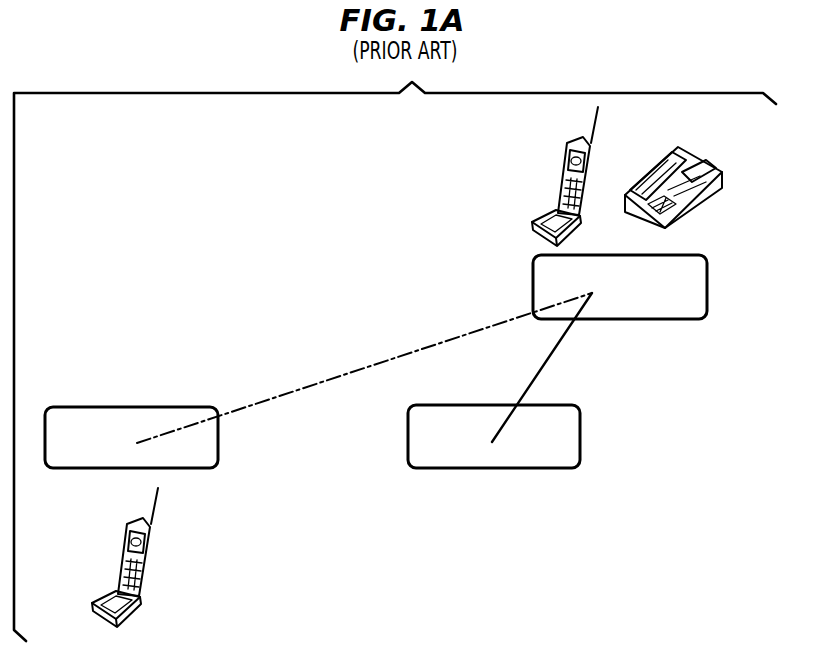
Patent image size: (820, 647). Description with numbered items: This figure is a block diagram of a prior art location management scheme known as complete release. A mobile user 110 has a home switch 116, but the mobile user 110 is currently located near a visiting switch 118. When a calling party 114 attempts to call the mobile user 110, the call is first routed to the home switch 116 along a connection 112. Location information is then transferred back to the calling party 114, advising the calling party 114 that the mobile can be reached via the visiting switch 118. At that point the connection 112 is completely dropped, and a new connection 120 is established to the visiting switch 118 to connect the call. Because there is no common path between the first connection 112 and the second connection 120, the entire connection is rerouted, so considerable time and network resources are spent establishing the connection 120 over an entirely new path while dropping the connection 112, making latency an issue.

The mobile user 110 is at (150, 557).
The connection 112 is at (553, 352).
The calling party 114 is at (708, 288).
The home switch 116 is at (582, 441).
The visiting switch 118 is at (120, 406).
The connection 120 is at (398, 356).